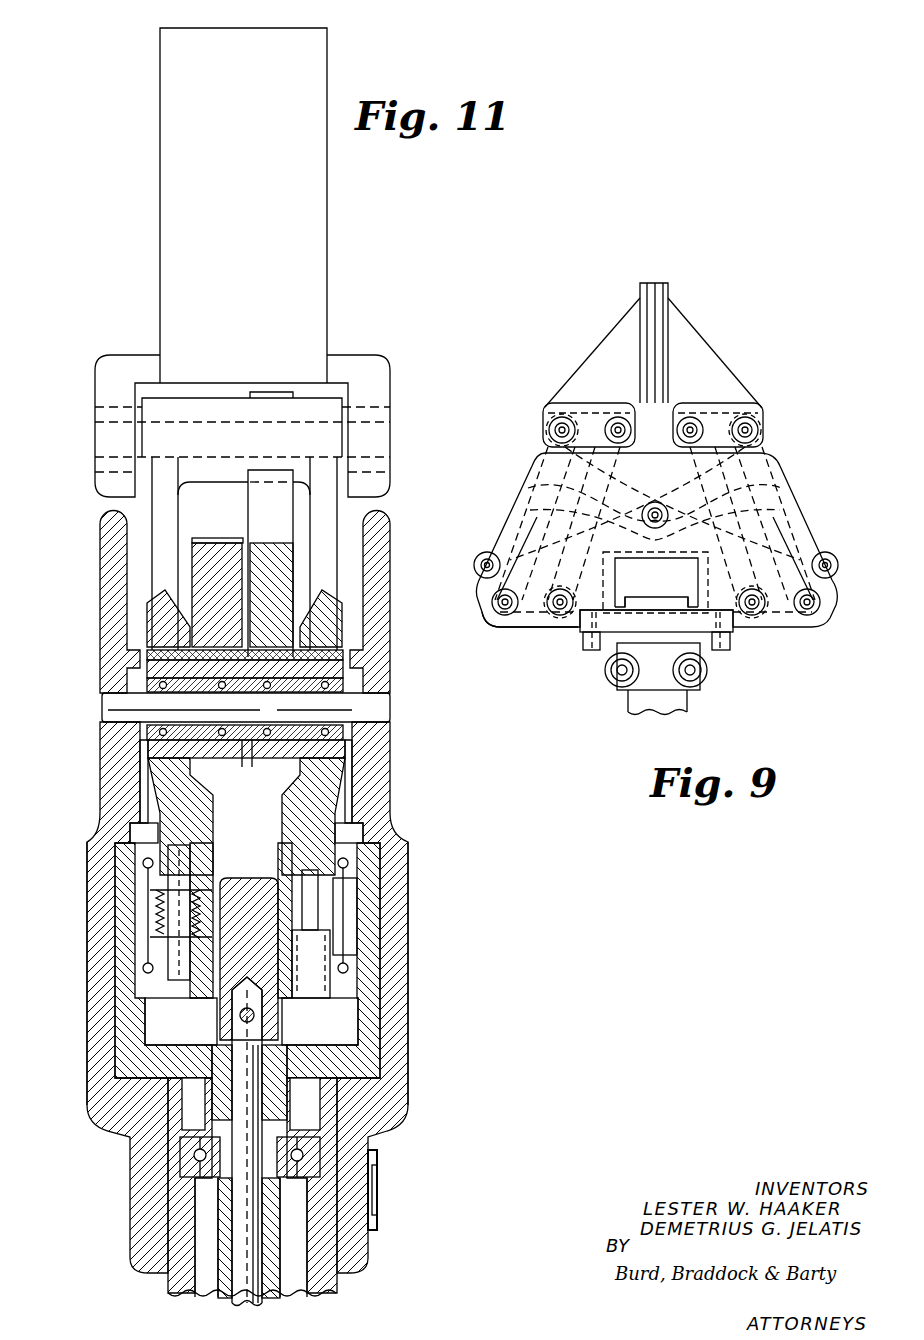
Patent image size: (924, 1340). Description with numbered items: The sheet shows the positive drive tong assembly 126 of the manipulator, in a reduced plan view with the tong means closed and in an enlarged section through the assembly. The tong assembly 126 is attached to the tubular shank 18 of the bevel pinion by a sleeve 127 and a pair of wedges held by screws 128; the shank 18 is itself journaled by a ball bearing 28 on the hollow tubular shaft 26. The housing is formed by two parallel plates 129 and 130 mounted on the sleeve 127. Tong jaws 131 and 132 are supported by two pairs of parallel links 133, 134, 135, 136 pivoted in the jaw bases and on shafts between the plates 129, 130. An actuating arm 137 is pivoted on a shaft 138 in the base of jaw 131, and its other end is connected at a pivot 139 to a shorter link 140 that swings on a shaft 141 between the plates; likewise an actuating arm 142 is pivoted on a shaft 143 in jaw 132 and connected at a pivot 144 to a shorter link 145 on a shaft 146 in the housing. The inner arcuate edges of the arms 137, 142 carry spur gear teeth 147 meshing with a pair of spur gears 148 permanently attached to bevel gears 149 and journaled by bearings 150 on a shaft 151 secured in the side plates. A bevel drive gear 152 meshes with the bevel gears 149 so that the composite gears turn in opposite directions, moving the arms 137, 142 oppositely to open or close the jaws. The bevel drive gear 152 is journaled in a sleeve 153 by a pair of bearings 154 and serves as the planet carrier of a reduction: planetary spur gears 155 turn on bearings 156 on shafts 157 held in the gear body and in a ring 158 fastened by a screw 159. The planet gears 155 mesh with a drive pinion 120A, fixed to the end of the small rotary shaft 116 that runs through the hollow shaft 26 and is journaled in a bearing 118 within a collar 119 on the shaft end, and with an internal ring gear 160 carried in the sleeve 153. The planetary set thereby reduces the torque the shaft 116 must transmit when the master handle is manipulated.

In FIG. 11, the tubular shank 18 is at (335, 1296).
In FIG. 9, the tubular shank 18 is at (682, 705).
In FIG. 11, the hollow tubular shaft 26 is at (278, 1252).
In FIG. 11, the ball bearing 28 is at (310, 1148).
In FIG. 11, the rotary shaft 116 is at (255, 1208).
In FIG. 11, the bearing 118 is at (262, 1062).
In FIG. 11, the collar 119 is at (290, 1097).
In FIG. 11, the drive pinion 120A is at (255, 930).
In FIG. 11, the tong assembly 126 is at (412, 874).
In FIG. 9, the tong assembly 126 is at (783, 457).
In FIG. 11, the sleeve 127 is at (360, 1262).
In FIG. 9, the sleeve 127 is at (650, 690).
In FIG. 11, the screws 128 is at (378, 1177).
In FIG. 9, the screws 128 is at (618, 673).
In FIG. 11, the plate 129 is at (397, 982).
In FIG. 9, the plate 129 is at (522, 617).
In FIG. 11, the plate 130 is at (95, 1015).
In FIG. 11, the tong jaw 131 is at (320, 227).
In FIG. 9, the tong jaw 131 is at (707, 362).
In FIG. 9, the tong jaw 132 is at (607, 352).
In FIG. 9, the parallel link 133 is at (783, 477).
In FIG. 11, the parallel link 134 is at (160, 507).
In FIG. 9, the parallel link 134 is at (770, 447).
In FIG. 9, the parallel link 135 is at (533, 478).
In FIG. 9, the parallel link 136 is at (590, 485).
In FIG. 11, the actuating arm 137 is at (285, 508).
In FIG. 9, the actuating arm 137 is at (500, 535).
In FIG. 9, the shaft 138 is at (743, 430).
In FIG. 9, the pivotal connection 139 is at (482, 565).
In FIG. 9, the shorter link 140 is at (538, 610).
In FIG. 9, the shaft 141 is at (560, 616).
In FIG. 11, the actuating arm 142 is at (200, 562).
In FIG. 9, the actuating arm 142 is at (813, 535).
In FIG. 9, the shaft 143 is at (560, 428).
In FIG. 9, the pivotal connection 144 is at (835, 565).
In FIG. 9, the shorter link 145 is at (775, 600).
In FIG. 9, the shaft 146 is at (752, 616).
In FIG. 11, the spur gear teeth 147 is at (205, 650).
In FIG. 11, the spur gear 148 is at (283, 772).
In FIG. 11, the bevel gear 149 is at (330, 620).
In FIG. 11, the bearings 150 is at (148, 752).
In FIG. 11, the shaft 151 is at (108, 712).
In FIG. 11, the bevel drive gear 152 is at (353, 826).
In FIG. 11, the sleeve 153 is at (368, 907).
In FIG. 11, the bearings 154 is at (352, 858).
In FIG. 11, the planetary spur gears 155 is at (160, 906).
In FIG. 11, the bearings 156 is at (185, 930).
In FIG. 11, the shafts 157 is at (165, 882).
In FIG. 11, the ring 158 is at (200, 1000).
In FIG. 11, the screw 159 is at (300, 1000).
In FIG. 11, the internal ring gear 160 is at (318, 930).